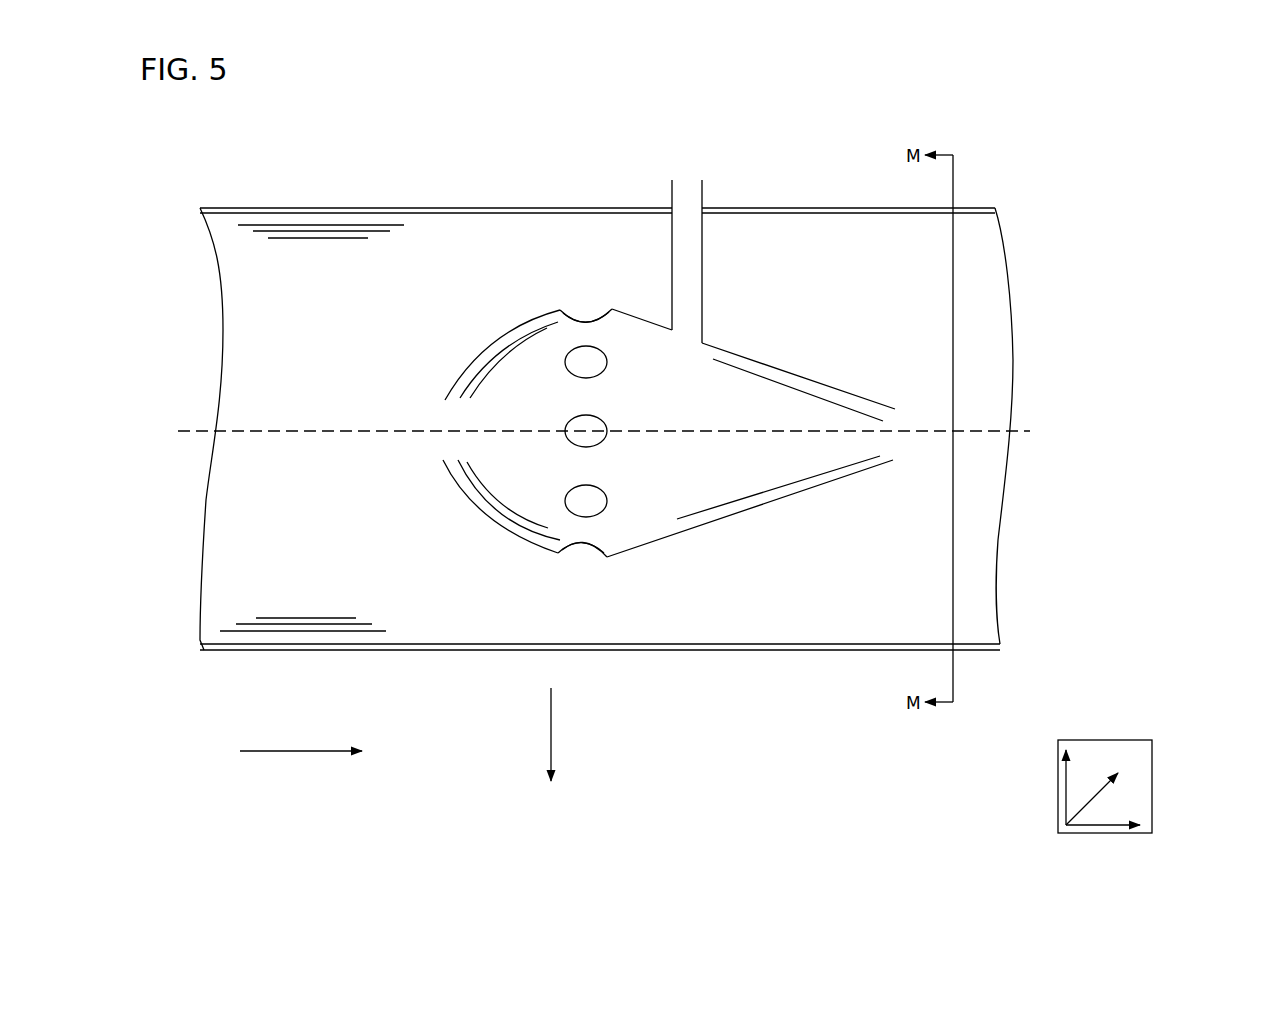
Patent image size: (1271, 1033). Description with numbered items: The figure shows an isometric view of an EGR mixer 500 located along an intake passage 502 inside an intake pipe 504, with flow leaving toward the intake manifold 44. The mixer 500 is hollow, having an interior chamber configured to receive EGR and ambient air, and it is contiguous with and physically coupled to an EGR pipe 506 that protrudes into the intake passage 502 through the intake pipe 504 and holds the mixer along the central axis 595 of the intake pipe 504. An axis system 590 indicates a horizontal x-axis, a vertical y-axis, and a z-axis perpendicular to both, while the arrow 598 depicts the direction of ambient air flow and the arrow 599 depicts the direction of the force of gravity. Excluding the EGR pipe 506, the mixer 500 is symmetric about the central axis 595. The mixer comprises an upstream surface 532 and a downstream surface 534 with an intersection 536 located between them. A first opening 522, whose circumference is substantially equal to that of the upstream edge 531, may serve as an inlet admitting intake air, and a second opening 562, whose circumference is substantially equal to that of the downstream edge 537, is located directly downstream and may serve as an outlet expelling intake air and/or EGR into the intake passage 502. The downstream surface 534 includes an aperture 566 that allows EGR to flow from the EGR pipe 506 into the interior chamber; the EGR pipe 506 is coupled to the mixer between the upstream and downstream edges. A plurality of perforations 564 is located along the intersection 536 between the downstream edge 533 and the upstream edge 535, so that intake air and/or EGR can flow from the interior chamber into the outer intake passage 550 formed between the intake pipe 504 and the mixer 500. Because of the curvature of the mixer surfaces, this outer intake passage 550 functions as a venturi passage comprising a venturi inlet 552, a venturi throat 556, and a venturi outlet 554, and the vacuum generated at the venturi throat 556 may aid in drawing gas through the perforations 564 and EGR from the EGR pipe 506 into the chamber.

The intake manifold 44 is at (1183, 434).
The mixer 500 is at (664, 373).
The intake passage 502 is at (309, 362).
The intake pipe 504 is at (440, 207).
The EGR pipe 506 is at (728, 255).
The first opening 522 is at (415, 418).
The upstream edge 531 is at (432, 385).
The upstream surface 532 is at (492, 350).
The downstream edge 533 is at (553, 305).
The downstream surface 534 is at (740, 362).
The upstream edge 535 is at (614, 298).
The intersection 536 is at (578, 332).
The downstream edge 537 is at (895, 400).
The outer intake passage 550 is at (649, 531).
The venturi inlet 552 is at (486, 600).
The venturi outlet 554 is at (749, 600).
The venturi throat 556 is at (584, 600).
The second opening 562 is at (903, 452).
The perforations 564 is at (617, 441).
The aperture 566 is at (687, 340).
The axis system 590 is at (1118, 740).
The central axis 595 is at (1012, 430).
The arrow 598 is at (270, 751).
The arrow 599 is at (551, 735).